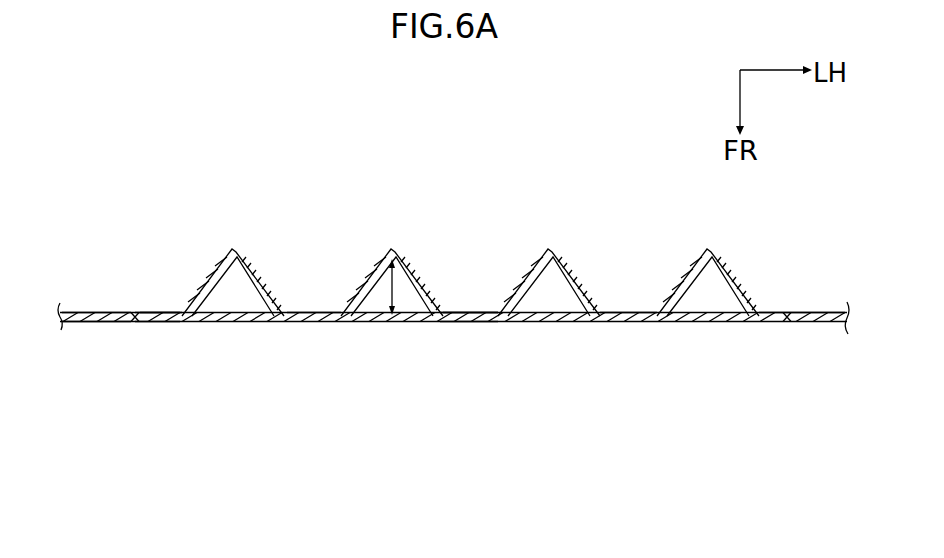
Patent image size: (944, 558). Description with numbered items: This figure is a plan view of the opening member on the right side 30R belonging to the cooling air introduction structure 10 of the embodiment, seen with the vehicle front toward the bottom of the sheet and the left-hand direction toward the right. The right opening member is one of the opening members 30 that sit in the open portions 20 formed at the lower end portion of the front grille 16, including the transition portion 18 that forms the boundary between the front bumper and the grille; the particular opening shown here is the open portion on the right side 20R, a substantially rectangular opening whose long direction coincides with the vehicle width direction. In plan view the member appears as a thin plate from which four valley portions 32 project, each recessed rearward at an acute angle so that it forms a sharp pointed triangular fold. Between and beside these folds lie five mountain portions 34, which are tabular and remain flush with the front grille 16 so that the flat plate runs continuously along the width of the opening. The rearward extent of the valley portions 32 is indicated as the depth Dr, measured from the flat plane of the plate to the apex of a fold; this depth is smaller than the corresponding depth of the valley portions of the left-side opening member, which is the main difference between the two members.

The cooling air introduction structure 10 is at (685, 392).
The front grille 16 is at (85, 322).
The transition portion 18 is at (558, 322).
The open portion on the right side 20R is at (142, 322).
The open portion 20 is at (157, 317).
The opening member on the right side 30R is at (468, 322).
The opening member 30 is at (469, 317).
The valley portion 32 is at (240, 266).
The mountain portion 34 is at (157, 322).
The depth of the valley portions of the right opening member Dr is at (384, 281).